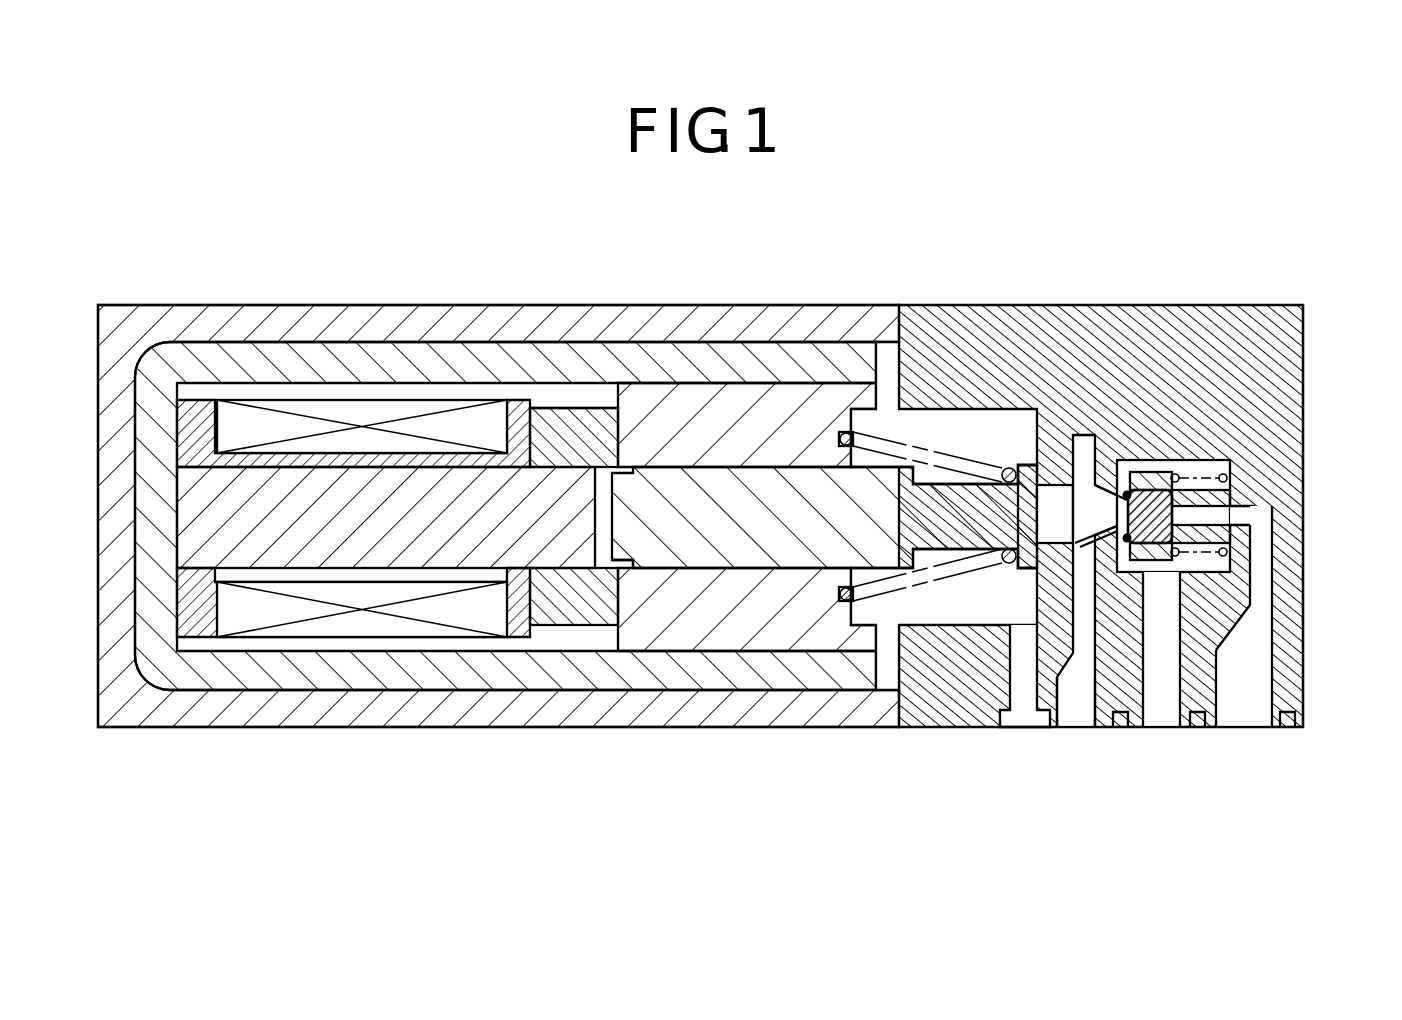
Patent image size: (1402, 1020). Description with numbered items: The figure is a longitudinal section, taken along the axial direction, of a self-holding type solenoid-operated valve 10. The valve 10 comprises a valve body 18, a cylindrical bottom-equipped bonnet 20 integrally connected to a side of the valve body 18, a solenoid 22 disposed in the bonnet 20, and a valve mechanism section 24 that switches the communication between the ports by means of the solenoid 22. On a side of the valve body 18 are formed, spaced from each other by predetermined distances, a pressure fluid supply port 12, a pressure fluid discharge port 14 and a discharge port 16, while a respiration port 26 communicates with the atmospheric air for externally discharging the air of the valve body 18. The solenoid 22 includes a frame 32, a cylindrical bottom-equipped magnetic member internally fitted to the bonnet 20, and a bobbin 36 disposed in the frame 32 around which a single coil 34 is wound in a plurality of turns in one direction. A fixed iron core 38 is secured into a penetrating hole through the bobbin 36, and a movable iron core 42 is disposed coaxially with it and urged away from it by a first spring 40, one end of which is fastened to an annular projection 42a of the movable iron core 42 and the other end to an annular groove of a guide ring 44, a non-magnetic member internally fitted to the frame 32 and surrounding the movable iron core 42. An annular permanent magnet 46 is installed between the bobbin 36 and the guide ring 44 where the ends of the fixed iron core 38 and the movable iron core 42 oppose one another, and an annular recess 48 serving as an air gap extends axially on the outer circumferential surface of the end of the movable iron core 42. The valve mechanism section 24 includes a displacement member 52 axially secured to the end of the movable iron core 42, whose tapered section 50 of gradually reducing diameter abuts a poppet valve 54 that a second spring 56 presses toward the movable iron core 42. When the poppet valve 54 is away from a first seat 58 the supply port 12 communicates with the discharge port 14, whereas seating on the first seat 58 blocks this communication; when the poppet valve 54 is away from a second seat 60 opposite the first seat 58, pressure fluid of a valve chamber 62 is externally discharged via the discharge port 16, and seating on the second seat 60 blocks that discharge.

The self-holding type solenoid-operated valve 10 is at (1144, 174).
The pressure fluid supply port 12 is at (1252, 712).
The pressure fluid discharge port 14 is at (1165, 712).
The discharge port 16 is at (1076, 712).
The valve body 18 is at (1122, 300).
The bottom-equipped bonnet 20 is at (490, 328).
The solenoid 22 is at (577, 394).
The valve mechanism section 24 is at (1089, 452).
The respiration port 26 is at (1027, 712).
The frame 32 is at (266, 684).
The coil 34 is at (354, 628).
The bobbin 36 is at (349, 458).
The fixed iron core 38 is at (424, 522).
The first spring 40 is at (1011, 468).
The movable iron core 42 is at (772, 530).
The annular projection 42a is at (1027, 467).
The guide ring 44 is at (763, 418).
The annular permanent magnet 46 is at (572, 604).
The annular recess 48 is at (631, 565).
The tapered section 50 is at (1103, 488).
The displacement member 52 is at (1057, 524).
The poppet valve 54 is at (1196, 516).
The second spring 56 is at (1228, 554).
The first seat 58 is at (1180, 508).
The second seat 60 is at (1105, 566).
The valve chamber 62 is at (1237, 616).